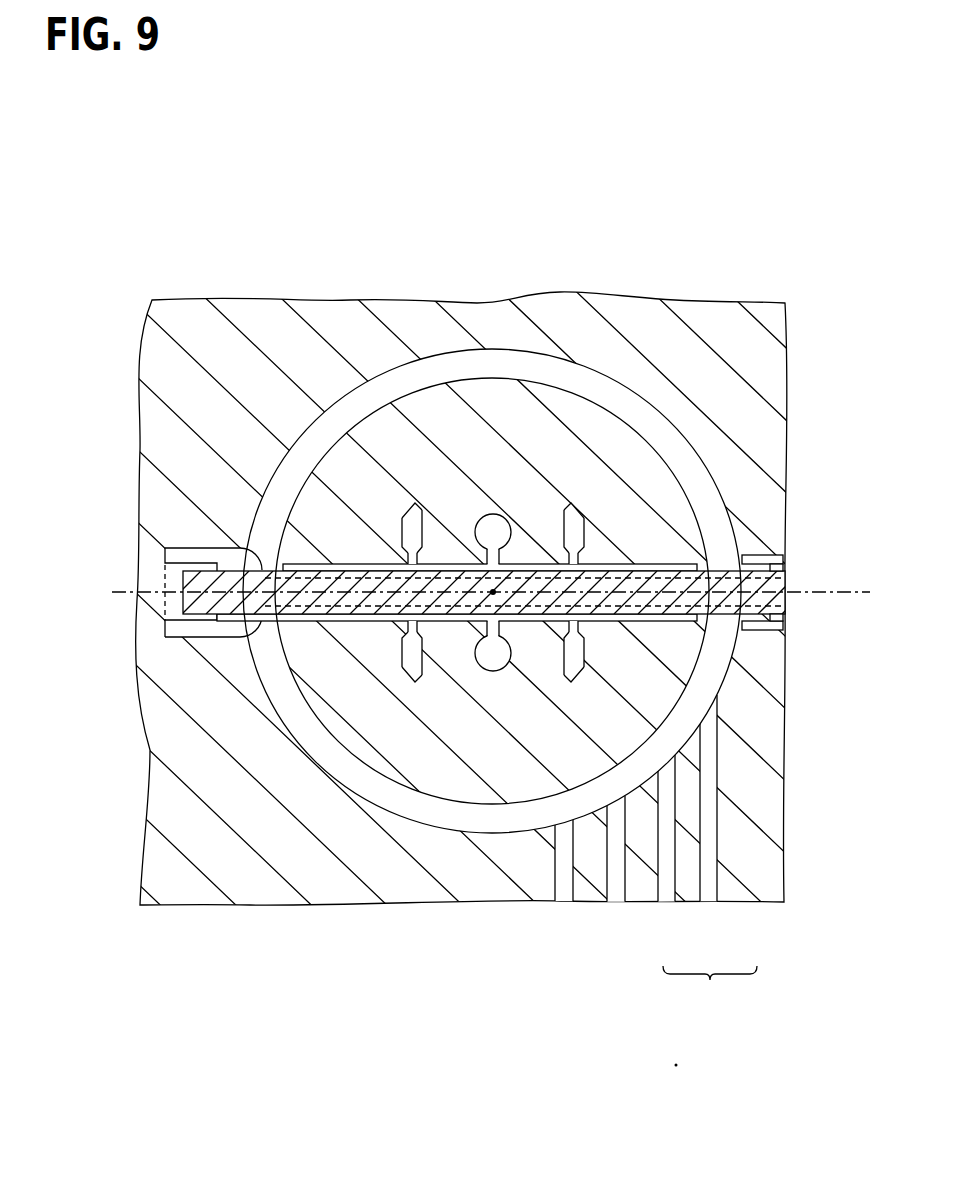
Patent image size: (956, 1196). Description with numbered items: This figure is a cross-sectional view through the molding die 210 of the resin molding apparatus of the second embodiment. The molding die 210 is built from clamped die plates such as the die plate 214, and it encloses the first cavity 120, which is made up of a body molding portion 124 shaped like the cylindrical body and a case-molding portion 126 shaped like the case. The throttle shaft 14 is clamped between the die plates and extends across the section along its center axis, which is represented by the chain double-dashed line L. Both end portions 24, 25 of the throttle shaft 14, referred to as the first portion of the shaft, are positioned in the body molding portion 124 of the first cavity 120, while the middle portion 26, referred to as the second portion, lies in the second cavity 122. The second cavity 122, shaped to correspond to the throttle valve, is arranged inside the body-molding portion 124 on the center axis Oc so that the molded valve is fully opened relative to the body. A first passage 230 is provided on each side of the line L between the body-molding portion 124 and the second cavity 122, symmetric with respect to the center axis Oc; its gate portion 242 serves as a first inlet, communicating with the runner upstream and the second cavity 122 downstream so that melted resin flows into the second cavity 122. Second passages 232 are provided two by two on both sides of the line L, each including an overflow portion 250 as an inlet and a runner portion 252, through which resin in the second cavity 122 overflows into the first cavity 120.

The throttle shaft 14 is at (461, 578).
The end portion of the throttle shaft 24 is at (245, 555).
The end portion of the throttle shaft 25 is at (744, 556).
The middle portion of the throttle shaft 26 is at (398, 561).
The first cavity 120 is at (710, 990).
The second cavity 122 is at (330, 625).
The body molding portion 124 is at (637, 775).
The case-molding portion 126 is at (708, 885).
The molding die 210 is at (181, 914).
The die plate 214 is at (789, 303).
The first passage 230 is at (498, 503).
The second passage 232 is at (392, 525).
The gate portion 242 is at (508, 556).
The overflow portion 250 is at (408, 558).
The runner portion 252 is at (422, 518).
The center axis of the throttle shaft L is at (823, 592).
The center axis of the body-molding portion Oc is at (783, 603).